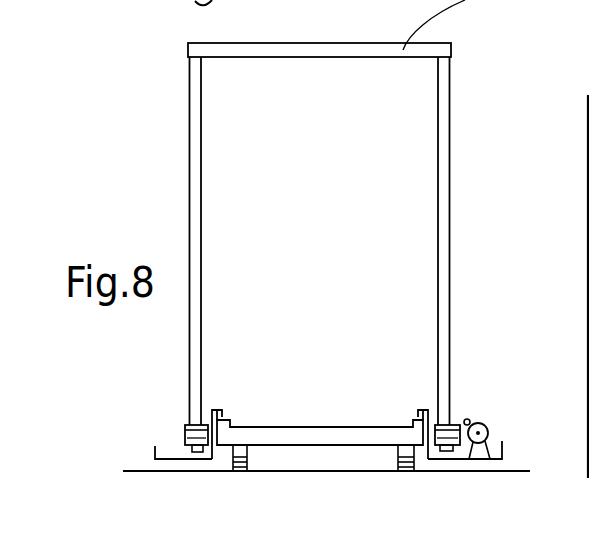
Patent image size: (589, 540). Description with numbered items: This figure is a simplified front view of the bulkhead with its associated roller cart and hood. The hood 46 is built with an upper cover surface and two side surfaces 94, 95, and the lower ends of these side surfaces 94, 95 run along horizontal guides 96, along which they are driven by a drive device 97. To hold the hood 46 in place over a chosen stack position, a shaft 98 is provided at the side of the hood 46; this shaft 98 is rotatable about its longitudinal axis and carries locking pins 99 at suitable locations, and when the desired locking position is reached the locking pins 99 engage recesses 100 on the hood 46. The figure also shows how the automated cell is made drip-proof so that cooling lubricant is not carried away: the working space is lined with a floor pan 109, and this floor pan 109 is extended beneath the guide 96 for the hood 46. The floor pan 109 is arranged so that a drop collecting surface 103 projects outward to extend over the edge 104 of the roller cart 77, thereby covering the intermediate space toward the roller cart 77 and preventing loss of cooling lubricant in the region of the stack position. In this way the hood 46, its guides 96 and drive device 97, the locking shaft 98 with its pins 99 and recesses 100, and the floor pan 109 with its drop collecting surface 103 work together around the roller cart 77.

The hood 46 is at (452, 140).
The roller cart 77 is at (370, 436).
The side surface 94 is at (440, 228).
The side surface 95 is at (193, 240).
The horizontal guide 96 is at (187, 448).
The drive device 97 is at (183, 437).
The shaft 98 is at (490, 432).
The locking pin 99 is at (471, 420).
The recess 100 is at (458, 426).
The drop collecting surface 103 is at (216, 411).
The edge 104 is at (228, 421).
The floor pan 109 is at (173, 458).